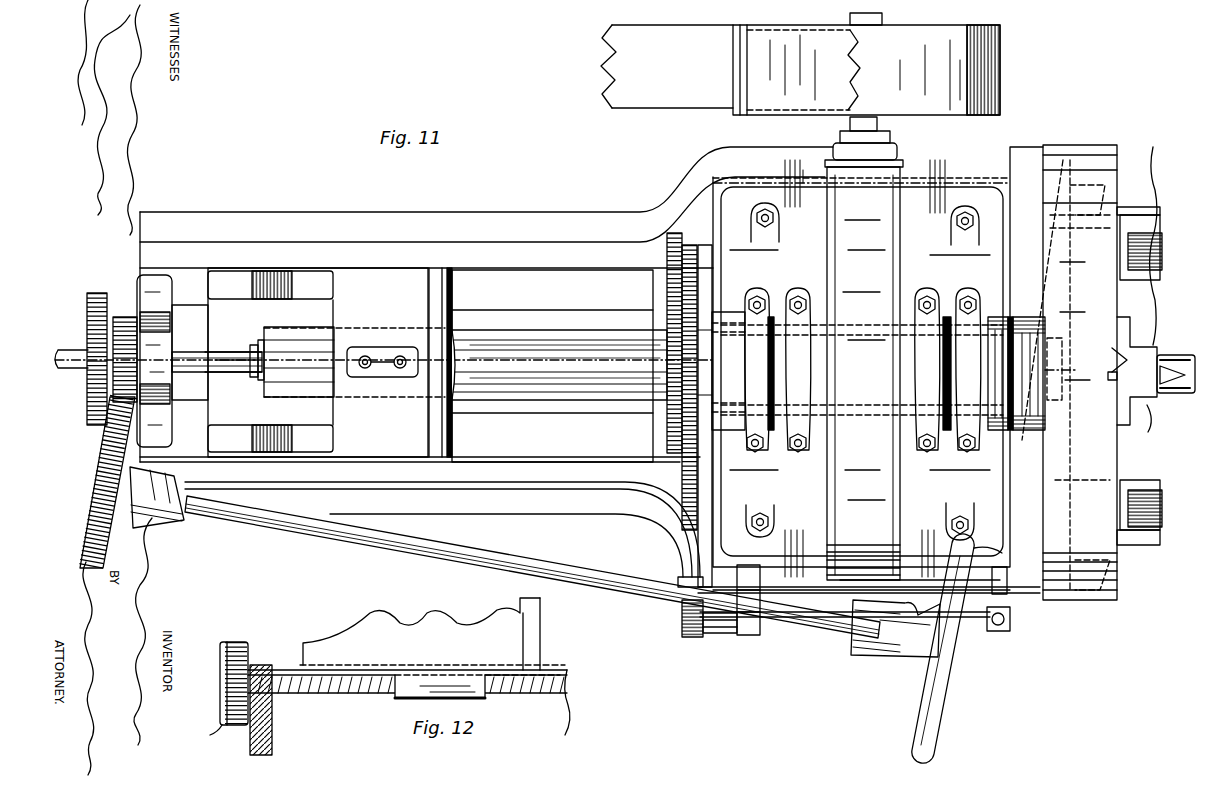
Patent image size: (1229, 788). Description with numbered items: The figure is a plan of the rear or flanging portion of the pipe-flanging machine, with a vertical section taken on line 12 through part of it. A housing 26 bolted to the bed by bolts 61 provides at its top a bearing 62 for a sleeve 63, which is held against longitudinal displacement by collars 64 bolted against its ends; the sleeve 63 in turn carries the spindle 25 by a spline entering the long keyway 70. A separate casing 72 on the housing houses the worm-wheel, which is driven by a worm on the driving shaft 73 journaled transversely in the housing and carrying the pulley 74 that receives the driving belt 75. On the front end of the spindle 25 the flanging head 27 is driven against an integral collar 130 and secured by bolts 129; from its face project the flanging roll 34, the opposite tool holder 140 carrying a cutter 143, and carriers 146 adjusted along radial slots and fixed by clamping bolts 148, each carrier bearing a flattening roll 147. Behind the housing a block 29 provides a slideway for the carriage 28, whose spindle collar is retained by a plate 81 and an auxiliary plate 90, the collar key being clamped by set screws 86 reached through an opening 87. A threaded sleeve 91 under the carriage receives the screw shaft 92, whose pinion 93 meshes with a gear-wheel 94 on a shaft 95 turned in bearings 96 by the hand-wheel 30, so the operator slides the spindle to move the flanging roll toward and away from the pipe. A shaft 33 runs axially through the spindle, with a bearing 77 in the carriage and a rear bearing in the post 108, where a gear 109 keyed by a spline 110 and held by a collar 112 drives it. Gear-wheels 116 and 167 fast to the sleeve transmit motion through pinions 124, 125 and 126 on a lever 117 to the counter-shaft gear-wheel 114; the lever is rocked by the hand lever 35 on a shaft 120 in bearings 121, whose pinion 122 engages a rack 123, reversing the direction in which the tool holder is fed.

In FIG. 11, the section line 12 is at (111, 300).
In FIG. 11, the spindle 25 is at (578, 380).
In FIG. 11, the housing 26 is at (971, 483).
In FIG. 11, the flanging head 27 is at (1073, 600).
In FIG. 11, the carriage 28 is at (326, 362).
In FIG. 12, the carriage 28 is at (436, 666).
In FIG. 11, the block 29 is at (486, 268).
In FIG. 12, the block 29 is at (273, 736).
In FIG. 11, the hand-wheel 30 is at (945, 687).
In FIG. 11, the shaft 33 is at (230, 352).
In FIG. 11, the flanging roll 34 is at (1180, 355).
In FIG. 11, the hand lever 35 is at (1002, 632).
In FIG. 11, the bolts 61 is at (782, 217).
In FIG. 11, the bearing 62 is at (950, 312).
In FIG. 11, the sleeve 63 is at (862, 420).
In FIG. 11, the collars 64 is at (718, 323).
In FIG. 11, the keyway 70 is at (625, 370).
In FIG. 11, the casing 72 is at (878, 366).
In FIG. 11, the driving shaft 73 is at (890, 126).
In FIG. 11, the pulley 74 is at (820, 25).
In FIG. 11, the driving belt 75 is at (667, 66).
In FIG. 11, the bearing 77 is at (257, 378).
In FIG. 11, the plate 81 is at (437, 268).
In FIG. 11, the set screws 86 is at (398, 369).
In FIG. 11, the opening 87 is at (390, 347).
In FIG. 11, the auxiliary plate 90 is at (453, 292).
In FIG. 12, the threaded sleeve 91 is at (413, 688).
In FIG. 12, the screw shaft 92 is at (353, 694).
In FIG. 11, the pinion 93 is at (124, 317).
In FIG. 12, the pinion 93 is at (224, 725).
In FIG. 11, the gear-wheel 94 is at (97, 495).
In FIG. 11, the shaft 95 is at (532, 567).
In FIG. 11, the bearings 96 is at (153, 519).
In FIG. 11, the post 108 is at (178, 386).
In FIG. 11, the gear 109 is at (87, 394).
In FIG. 11, the spline 110 is at (196, 353).
In FIG. 11, the collar 112 is at (175, 325).
In FIG. 11, the gear-wheel 114 is at (672, 453).
In FIG. 11, the gear-wheel 116 is at (667, 330).
In FIG. 11, the lever 117 is at (688, 546).
In FIG. 11, the shaft 120 is at (708, 635).
In FIG. 11, the bearings 121 is at (745, 573).
In FIG. 11, the pinion 122 is at (683, 633).
In FIG. 11, the rack 123 is at (688, 577).
In FIG. 11, the pinion 124 is at (673, 233).
In FIG. 11, the pinion 125 is at (684, 506).
In FIG. 11, the pinion 126 is at (641, 490).
In FIG. 11, the bolts 129 is at (1025, 370).
In FIG. 11, the collar 130 is at (1022, 316).
In FIG. 11, the tool holder 140 is at (1143, 388).
In FIG. 11, the cutter 143 is at (1185, 376).
In FIG. 11, the carrier 146 is at (1160, 219).
In FIG. 11, the flattening roll 147 is at (1162, 254).
In FIG. 11, the clamping bolt 148 is at (1112, 195).
In FIG. 11, the gear-wheel 167 is at (698, 368).